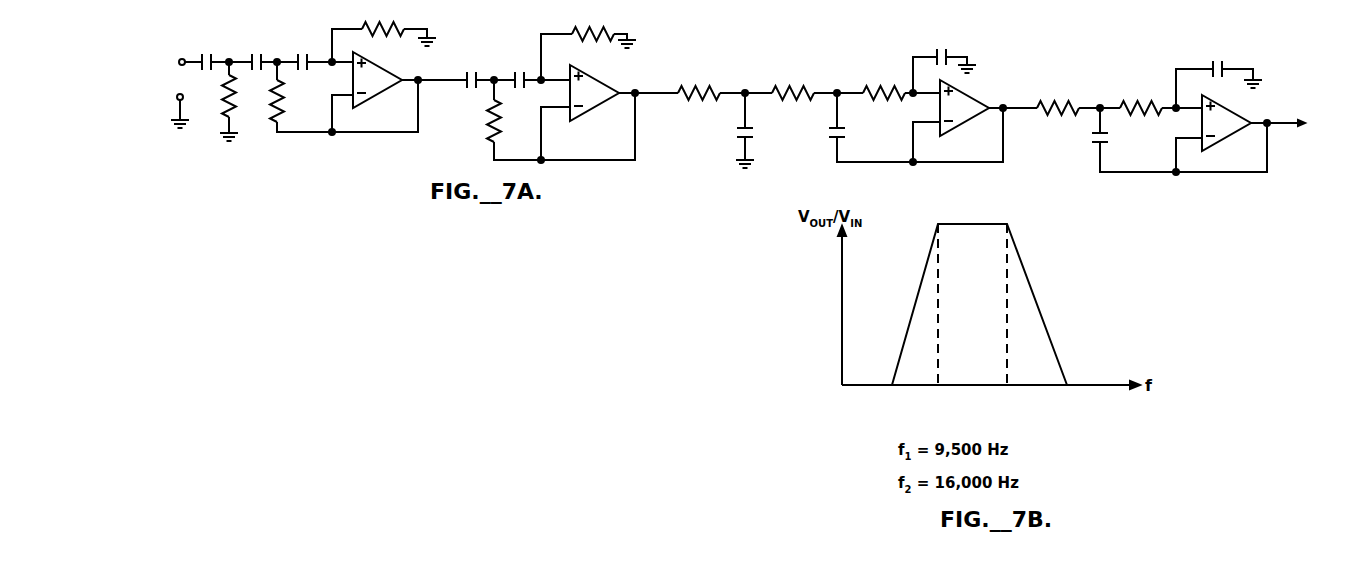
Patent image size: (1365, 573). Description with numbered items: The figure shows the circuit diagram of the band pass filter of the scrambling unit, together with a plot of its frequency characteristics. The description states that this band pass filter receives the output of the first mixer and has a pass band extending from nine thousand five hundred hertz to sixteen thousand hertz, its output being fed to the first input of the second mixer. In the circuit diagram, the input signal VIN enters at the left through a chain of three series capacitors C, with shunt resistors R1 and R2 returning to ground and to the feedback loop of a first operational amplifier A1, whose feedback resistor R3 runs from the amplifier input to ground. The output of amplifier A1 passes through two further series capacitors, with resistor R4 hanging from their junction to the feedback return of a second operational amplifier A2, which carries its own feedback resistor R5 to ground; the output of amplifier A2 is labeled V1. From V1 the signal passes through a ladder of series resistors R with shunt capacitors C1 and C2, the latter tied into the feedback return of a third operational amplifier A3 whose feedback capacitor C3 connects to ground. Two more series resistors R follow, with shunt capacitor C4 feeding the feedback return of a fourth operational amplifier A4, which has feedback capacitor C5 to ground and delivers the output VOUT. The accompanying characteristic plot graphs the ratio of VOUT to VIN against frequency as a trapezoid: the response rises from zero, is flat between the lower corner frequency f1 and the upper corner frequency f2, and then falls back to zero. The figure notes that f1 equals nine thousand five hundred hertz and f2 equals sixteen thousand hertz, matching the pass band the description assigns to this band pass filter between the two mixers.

In FIG. 7A, the input voltage terminal VIN is at (175, 58).
In FIG. 7A, the coupling capacitor C is at (277, 52).
In FIG. 7A, the resistor R1 is at (239, 101).
In FIG. 7A, the resistor R2 is at (344, 98).
In FIG. 7A, the feedback resistor R3 is at (384, 31).
In FIG. 7A, the resistor R4 is at (550, 117).
In FIG. 7A, the feedback resistor R5 is at (588, 41).
In FIG. 7A, the resistor R is at (940, 90).
In FIG. 7A, the capacitor C1 is at (737, 130).
In FIG. 7A, the capacitor C2 is at (916, 129).
In FIG. 7A, the feedback capacitor C3 is at (944, 59).
In FIG. 7A, the capacitor C4 is at (1169, 141).
In FIG. 7A, the feedback capacitor C5 is at (1219, 71).
In FIG. 7A, the operational amplifier A1 is at (409, 105).
In FIG. 7A, the operational amplifier A2 is at (624, 127).
In FIG. 7A, the operational amplifier A3 is at (977, 135).
In FIG. 7A, the operational amplifier A4 is at (1236, 147).
In FIG. 7A, the intermediate voltage V1 is at (645, 74).
In FIG. 7A, the output voltage terminal VOUT is at (1306, 124).
In FIG. 7B, the lower cutoff frequency f1 is at (938, 320).
In FIG. 7B, the upper cutoff frequency f2 is at (1004, 320).